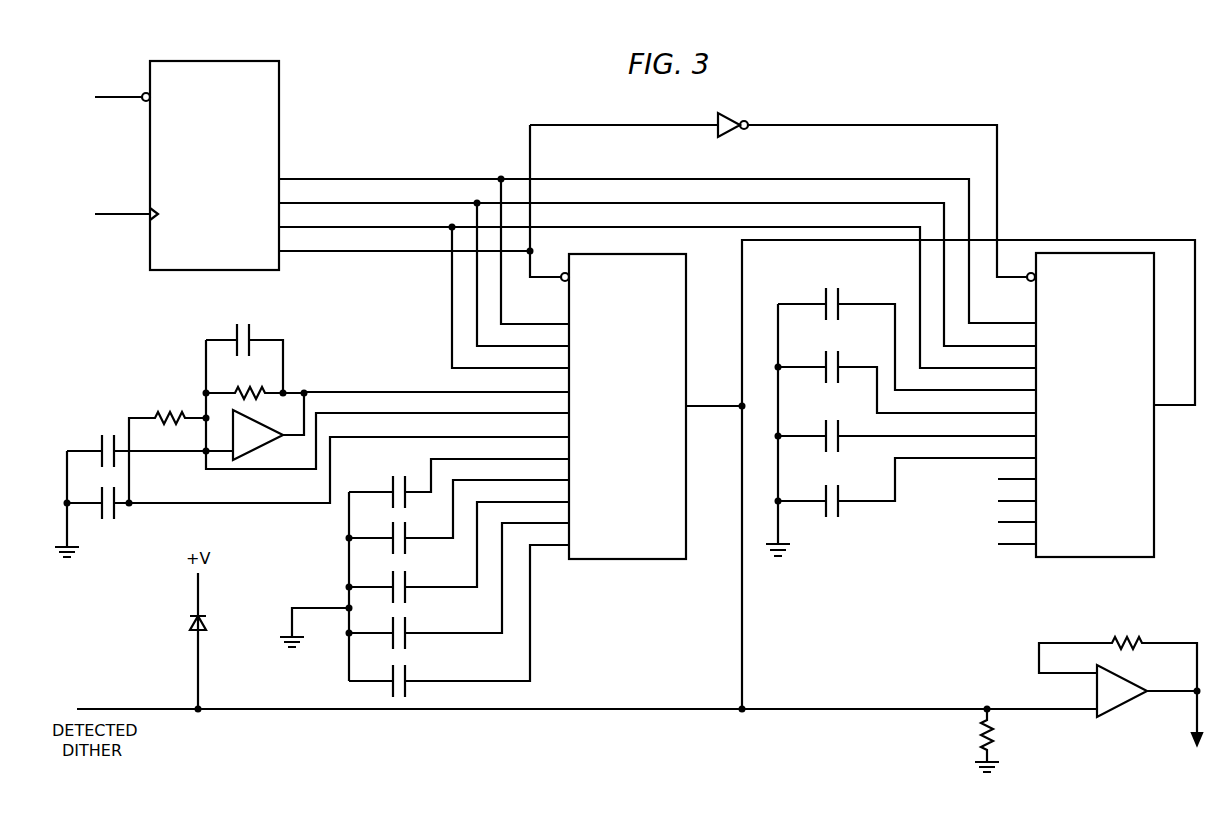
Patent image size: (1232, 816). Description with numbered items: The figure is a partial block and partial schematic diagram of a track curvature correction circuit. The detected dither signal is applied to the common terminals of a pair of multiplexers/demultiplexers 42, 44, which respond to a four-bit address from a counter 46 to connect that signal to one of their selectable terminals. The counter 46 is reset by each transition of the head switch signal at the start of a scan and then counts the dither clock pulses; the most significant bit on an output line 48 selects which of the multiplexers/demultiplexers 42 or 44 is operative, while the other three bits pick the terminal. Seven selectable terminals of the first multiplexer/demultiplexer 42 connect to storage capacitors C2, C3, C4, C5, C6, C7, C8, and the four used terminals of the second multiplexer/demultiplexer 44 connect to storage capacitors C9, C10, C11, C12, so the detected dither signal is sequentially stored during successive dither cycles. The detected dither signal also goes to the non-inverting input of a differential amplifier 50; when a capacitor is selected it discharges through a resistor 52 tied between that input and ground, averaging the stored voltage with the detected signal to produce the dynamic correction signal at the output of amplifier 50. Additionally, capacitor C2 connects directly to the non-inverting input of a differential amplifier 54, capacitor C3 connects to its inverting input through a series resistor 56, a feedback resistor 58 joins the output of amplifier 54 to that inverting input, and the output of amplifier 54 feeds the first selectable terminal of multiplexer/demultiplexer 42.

The multiplexer/demultiplexer 42 is at (686, 284).
The multiplexer/demultiplexer 44 is at (1154, 495).
The counter 46 is at (279, 100).
The output line 48 is at (383, 252).
The differential amplifier 50 is at (1125, 703).
The resistor 52 is at (990, 735).
The differential amplifier 54 is at (262, 443).
The series resistor 56 is at (170, 412).
The feedback resistor 58 is at (244, 391).
The storage capacitor C2 is at (150, 442).
The storage capacitor C3 is at (318, 478).
The storage capacitor C4 is at (459, 483).
The storage capacitor C5 is at (459, 517).
The storage capacitor C6 is at (459, 552).
The storage capacitor C7 is at (459, 586).
The storage capacitor C8 is at (459, 621).
The storage capacitor C9 is at (907, 333).
The storage capacitor C10 is at (907, 376).
The storage capacitor C11 is at (907, 430).
The storage capacitor C12 is at (907, 487).